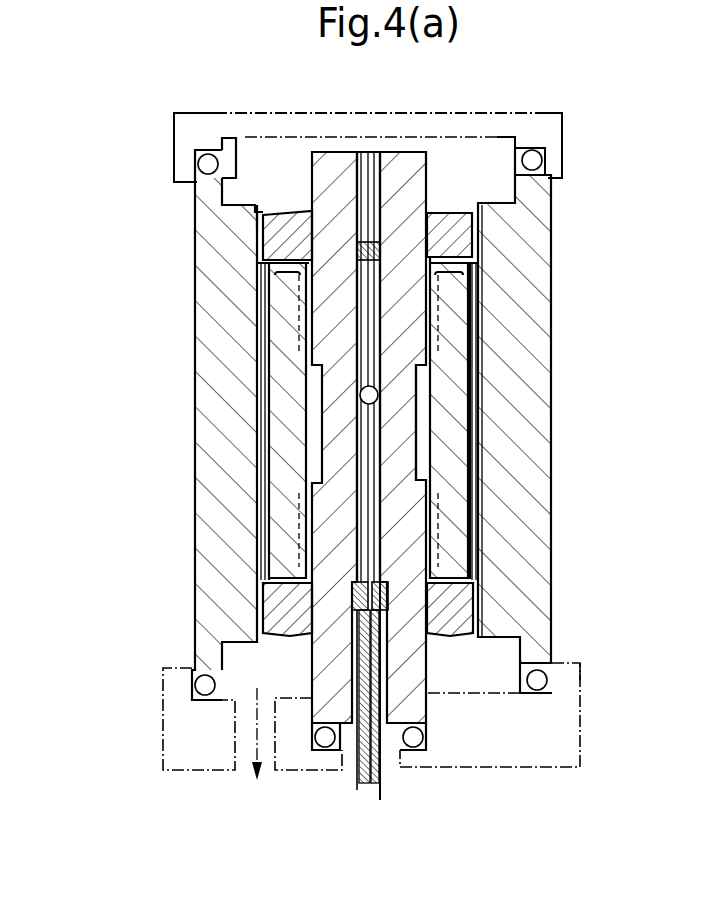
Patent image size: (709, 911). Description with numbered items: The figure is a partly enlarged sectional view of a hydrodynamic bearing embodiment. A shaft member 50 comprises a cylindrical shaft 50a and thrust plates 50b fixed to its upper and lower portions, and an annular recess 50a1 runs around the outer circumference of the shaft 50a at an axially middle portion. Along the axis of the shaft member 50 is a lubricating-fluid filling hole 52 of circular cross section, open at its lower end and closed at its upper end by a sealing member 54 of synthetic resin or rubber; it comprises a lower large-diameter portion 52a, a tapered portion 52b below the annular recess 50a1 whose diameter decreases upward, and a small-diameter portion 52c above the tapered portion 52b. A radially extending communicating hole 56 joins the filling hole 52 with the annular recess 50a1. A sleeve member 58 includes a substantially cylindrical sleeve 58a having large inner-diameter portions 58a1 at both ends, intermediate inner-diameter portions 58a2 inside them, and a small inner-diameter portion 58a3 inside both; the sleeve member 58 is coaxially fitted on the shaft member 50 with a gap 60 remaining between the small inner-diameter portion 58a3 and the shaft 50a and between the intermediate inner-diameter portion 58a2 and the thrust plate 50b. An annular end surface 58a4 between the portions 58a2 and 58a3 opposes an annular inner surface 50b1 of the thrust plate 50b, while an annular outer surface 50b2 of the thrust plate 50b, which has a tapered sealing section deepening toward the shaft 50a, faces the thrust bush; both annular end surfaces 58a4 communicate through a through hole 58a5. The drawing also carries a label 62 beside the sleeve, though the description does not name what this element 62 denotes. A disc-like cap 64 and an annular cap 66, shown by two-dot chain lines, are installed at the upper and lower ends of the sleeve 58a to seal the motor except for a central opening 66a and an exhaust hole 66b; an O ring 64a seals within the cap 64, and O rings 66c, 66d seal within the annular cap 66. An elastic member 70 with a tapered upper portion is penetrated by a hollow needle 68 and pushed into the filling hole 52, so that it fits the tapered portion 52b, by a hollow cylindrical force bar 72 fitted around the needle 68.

The shaft member 50 is at (413, 192).
The cylindrical shaft 50a is at (430, 190).
The annular recess 50a1 is at (418, 447).
The thrust plate 50b is at (462, 237).
The annular inner surface of thrust plate 50b1 is at (292, 272).
The annular outer surface of thrust plate 50b2 is at (273, 213).
The lubricating-fluid filling hole 52 is at (350, 730).
The lower large-diameter portion 52a is at (387, 667).
The tapered portion 52b is at (358, 598).
The small-diameter portion 52c is at (356, 440).
The sealing member 54 is at (378, 240).
The communicating hole 56 is at (378, 395).
The sleeve member 58 is at (550, 260).
The sleeve 58a is at (197, 212).
The large inner-diameter portion 58a1 is at (258, 210).
The intermediate inner-diameter portion 58a2 is at (239, 137).
The small inner-diameter portion 58a3 is at (300, 406).
The annular end surface 58a4 is at (277, 262).
The through hole 58a5 is at (262, 380).
The gap 60 is at (265, 500).
The sleeve liner 62 is at (473, 327).
The disc-like cap 64 is at (537, 121).
The O ring 64a is at (541, 160).
The annular cap 66 is at (568, 705).
The central opening 66a is at (340, 752).
The exhaust hole 66b is at (240, 777).
The O ring 66c is at (427, 740).
The O ring 66d is at (583, 667).
The hollow needle 68 is at (377, 775).
The elastic member 70 is at (440, 520).
The force bar 72 is at (382, 775).